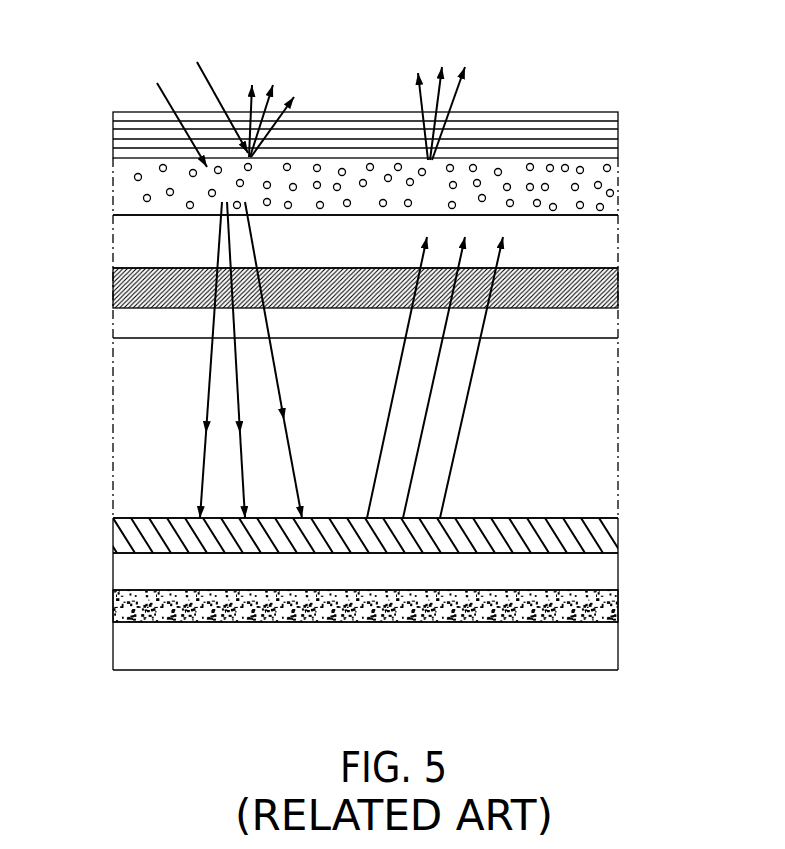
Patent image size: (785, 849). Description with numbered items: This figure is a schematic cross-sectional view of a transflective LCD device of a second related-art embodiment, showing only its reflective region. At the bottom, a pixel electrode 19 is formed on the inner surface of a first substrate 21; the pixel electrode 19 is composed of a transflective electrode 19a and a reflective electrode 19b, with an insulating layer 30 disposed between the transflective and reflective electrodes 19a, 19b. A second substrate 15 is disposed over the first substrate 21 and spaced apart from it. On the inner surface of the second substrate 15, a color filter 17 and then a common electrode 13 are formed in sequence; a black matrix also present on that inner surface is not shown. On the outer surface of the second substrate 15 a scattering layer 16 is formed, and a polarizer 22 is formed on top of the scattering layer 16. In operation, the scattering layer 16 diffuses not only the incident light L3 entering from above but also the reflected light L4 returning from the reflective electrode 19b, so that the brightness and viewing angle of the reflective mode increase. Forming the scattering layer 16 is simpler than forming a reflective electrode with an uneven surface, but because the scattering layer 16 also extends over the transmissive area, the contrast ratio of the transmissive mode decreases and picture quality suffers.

The polarizer 22 is at (620, 135).
The scattering layer 16 is at (614, 186).
The second substrate 15 is at (607, 240).
The color filter 17 is at (618, 292).
The common electrode 13 is at (607, 328).
The pixel electrode 19 is at (717, 527).
The reflective electrode 19b is at (620, 535).
The transflective electrode 19a is at (618, 602).
The first substrate 21 is at (605, 648).
The insulating layer 30 is at (125, 573).
The incident light L3 is at (157, 83).
The reflected light L4 is at (457, 442).